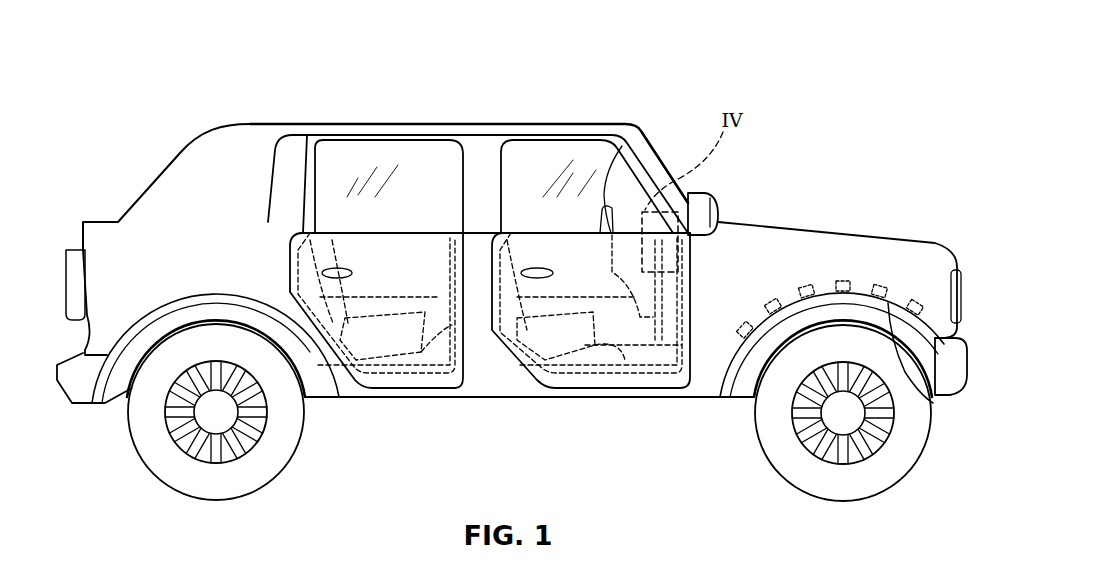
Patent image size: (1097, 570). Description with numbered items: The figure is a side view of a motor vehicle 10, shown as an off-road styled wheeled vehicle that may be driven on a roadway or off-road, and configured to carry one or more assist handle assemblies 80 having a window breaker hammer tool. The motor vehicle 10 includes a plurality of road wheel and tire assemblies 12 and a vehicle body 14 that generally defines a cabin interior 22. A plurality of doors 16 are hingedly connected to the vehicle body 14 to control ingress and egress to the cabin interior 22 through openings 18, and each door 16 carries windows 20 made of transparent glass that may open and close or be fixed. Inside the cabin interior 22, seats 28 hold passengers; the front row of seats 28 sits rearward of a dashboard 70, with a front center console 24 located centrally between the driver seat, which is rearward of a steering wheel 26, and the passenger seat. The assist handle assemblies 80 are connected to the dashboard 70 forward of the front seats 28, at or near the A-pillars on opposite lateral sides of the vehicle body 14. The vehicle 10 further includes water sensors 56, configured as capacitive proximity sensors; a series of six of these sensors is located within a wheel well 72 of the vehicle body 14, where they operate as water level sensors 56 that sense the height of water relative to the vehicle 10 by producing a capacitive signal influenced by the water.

The motor vehicle 10 is at (632, 108).
The road wheel and tire assemblies 12 is at (153, 447).
The vehicle body 14 is at (512, 382).
The doors 16 is at (462, 348).
The openings 18 is at (423, 375).
The windows 20 is at (352, 172).
The cabin interior 22 is at (524, 180).
The front center console 24 is at (587, 296).
The steering wheel 26 is at (624, 142).
The seats 28 is at (387, 345).
The water sensors 56 is at (742, 324).
The dashboard 70 is at (672, 220).
The wheel well 72 is at (933, 403).
The assist handle assemblies 80 is at (698, 193).